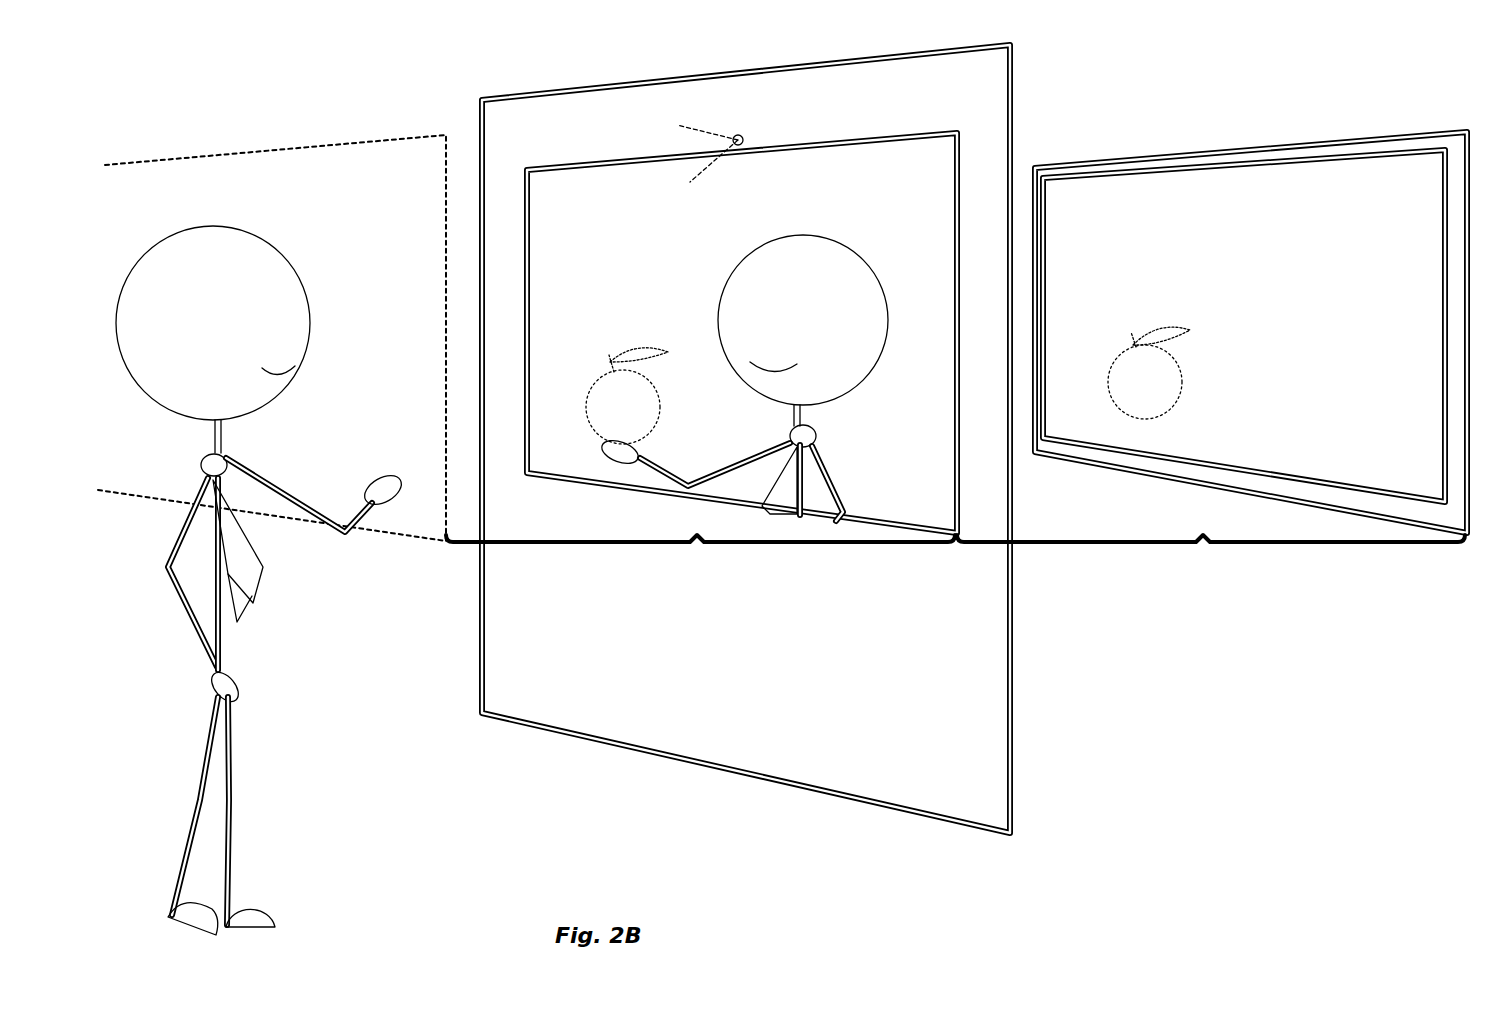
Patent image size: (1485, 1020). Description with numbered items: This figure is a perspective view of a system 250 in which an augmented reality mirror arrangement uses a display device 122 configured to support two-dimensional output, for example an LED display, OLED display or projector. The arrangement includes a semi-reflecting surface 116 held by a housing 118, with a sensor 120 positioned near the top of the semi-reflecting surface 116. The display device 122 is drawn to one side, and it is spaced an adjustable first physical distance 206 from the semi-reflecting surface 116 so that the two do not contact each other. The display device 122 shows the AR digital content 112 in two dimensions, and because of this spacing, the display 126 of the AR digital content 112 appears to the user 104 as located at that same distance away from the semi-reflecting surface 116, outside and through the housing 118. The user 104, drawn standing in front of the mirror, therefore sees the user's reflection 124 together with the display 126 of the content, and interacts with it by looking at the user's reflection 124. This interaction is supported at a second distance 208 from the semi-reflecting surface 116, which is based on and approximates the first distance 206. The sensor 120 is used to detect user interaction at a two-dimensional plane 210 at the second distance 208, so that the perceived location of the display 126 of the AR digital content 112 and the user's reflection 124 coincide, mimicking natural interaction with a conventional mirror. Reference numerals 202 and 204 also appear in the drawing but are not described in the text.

The user 104 is at (301, 614).
The AR digital content 112 is at (1133, 369).
The semi-reflecting surface 116 is at (558, 168).
The housing 118 is at (693, 439).
The sensor 120 is at (742, 133).
The display device 122 is at (1251, 413).
The user's reflection 124 is at (745, 265).
The display of the AR digital content 126 is at (613, 396).
The second display region 202 is at (1191, 658).
The first display region 204 is at (461, 760).
The first physical distance 206 is at (1203, 548).
The second distance 208 is at (695, 548).
The two-dimensional plane 210 is at (379, 135).
The system 250 is at (271, 300).